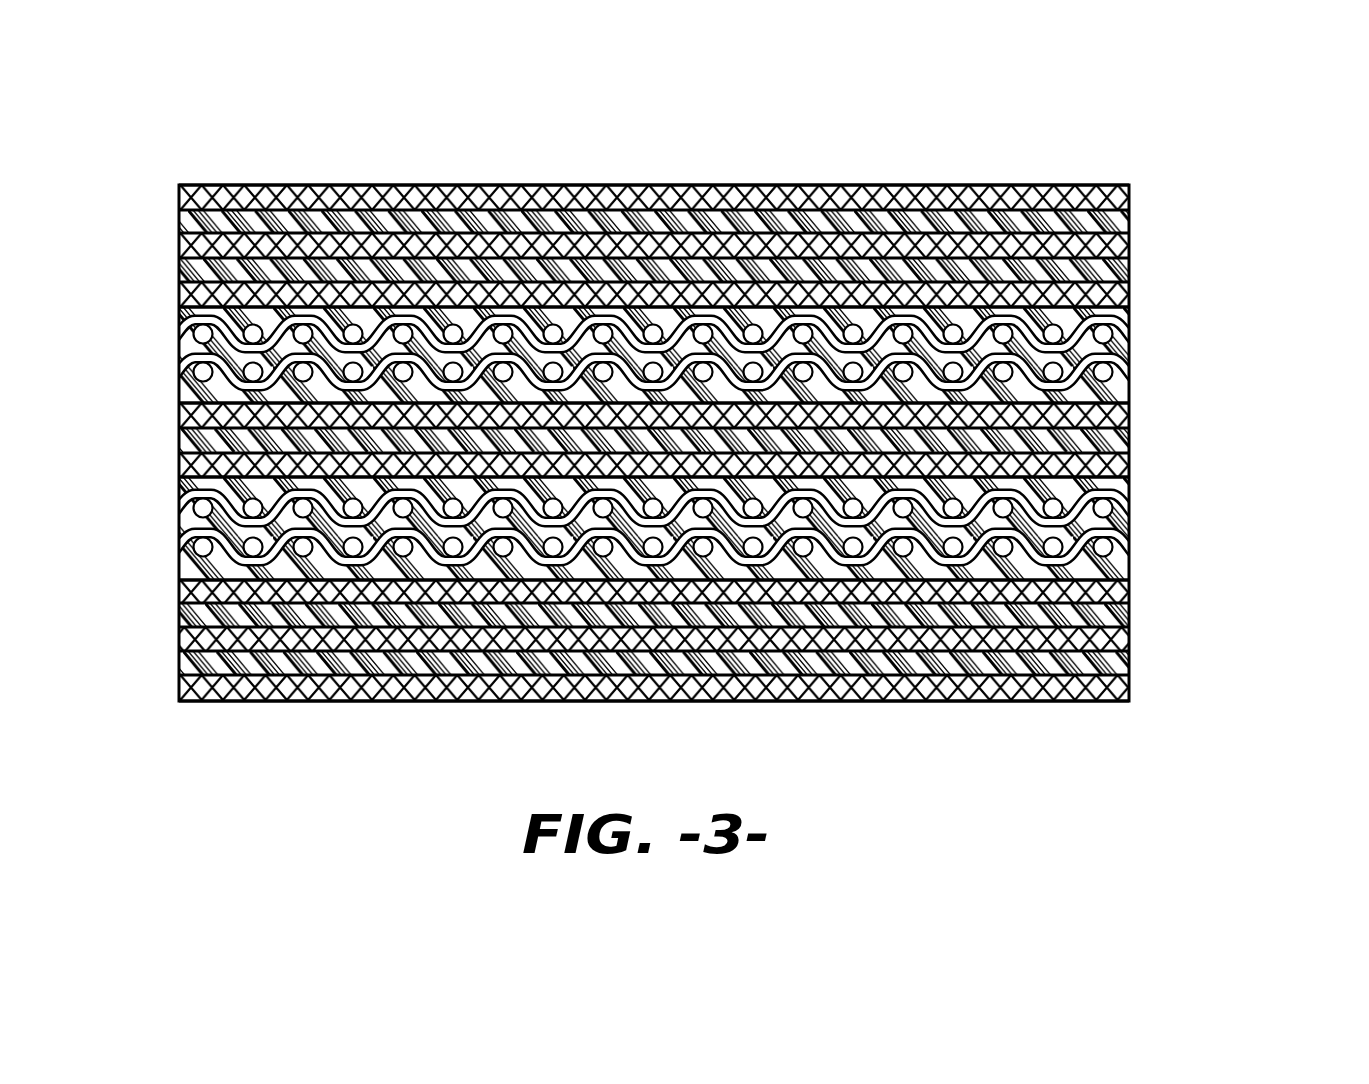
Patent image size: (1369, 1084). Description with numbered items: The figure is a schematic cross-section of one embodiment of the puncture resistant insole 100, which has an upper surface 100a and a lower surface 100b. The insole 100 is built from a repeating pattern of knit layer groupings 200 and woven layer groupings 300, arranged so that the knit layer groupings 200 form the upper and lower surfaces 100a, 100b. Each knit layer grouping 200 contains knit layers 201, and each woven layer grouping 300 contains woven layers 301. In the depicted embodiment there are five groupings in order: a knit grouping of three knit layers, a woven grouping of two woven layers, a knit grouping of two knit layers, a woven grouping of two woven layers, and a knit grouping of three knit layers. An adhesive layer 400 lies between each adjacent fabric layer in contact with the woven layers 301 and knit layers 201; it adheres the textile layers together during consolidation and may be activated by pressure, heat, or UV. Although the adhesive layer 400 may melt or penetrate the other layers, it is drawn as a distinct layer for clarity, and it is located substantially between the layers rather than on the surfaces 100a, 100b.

The puncture resistant insole 100 is at (654, 355).
The upper surface 100a is at (1192, 162).
The lower surface 100b is at (1192, 725).
The knit layer grouping 200 is at (1182, 186).
The knit layer 201 is at (176, 294).
The woven layer grouping 300 is at (1182, 309).
The woven layer 301 is at (177, 373).
The adhesive layer 400 is at (497, 347).